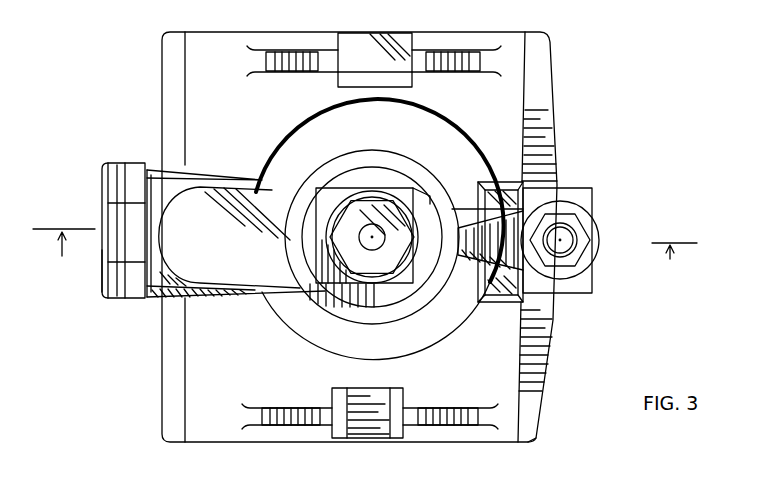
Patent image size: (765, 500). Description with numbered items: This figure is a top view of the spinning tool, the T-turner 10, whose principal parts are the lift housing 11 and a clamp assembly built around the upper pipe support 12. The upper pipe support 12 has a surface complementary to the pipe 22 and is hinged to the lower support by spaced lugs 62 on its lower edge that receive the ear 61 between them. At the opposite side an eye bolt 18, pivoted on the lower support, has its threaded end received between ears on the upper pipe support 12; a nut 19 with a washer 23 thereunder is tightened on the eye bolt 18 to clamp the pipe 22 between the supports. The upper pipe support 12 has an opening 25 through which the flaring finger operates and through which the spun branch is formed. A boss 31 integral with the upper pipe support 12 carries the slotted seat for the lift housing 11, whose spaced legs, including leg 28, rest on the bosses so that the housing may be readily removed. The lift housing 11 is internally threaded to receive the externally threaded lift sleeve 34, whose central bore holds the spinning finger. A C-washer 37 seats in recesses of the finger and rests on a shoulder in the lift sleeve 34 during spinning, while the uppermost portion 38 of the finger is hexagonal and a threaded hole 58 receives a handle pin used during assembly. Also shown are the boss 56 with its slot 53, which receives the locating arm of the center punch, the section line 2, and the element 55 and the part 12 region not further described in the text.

The section line 2- 2 is at (365, 255).
The T-turner 10 is at (560, 327).
The lift housing 11 is at (330, 317).
The upper pipe support 12 is at (546, 428).
The eye bolt 18 is at (572, 238).
The nut 19 is at (595, 249).
The pipe 22 is at (524, 239).
The washer 23 is at (586, 266).
The opening 25 is at (436, 356).
The leg 28 is at (209, 257).
The boss 31 is at (500, 186).
The lift sleeve 34 is at (446, 272).
The C-washer 37 is at (428, 200).
The uppermost portion 38 is at (390, 273).
The slot 53 is at (392, 388).
The upper block 55 is at (414, 88).
The boss 56 is at (334, 394).
The threaded hole 58 is at (360, 234).
The ear 61 is at (104, 240).
The lugs 62 is at (110, 182).